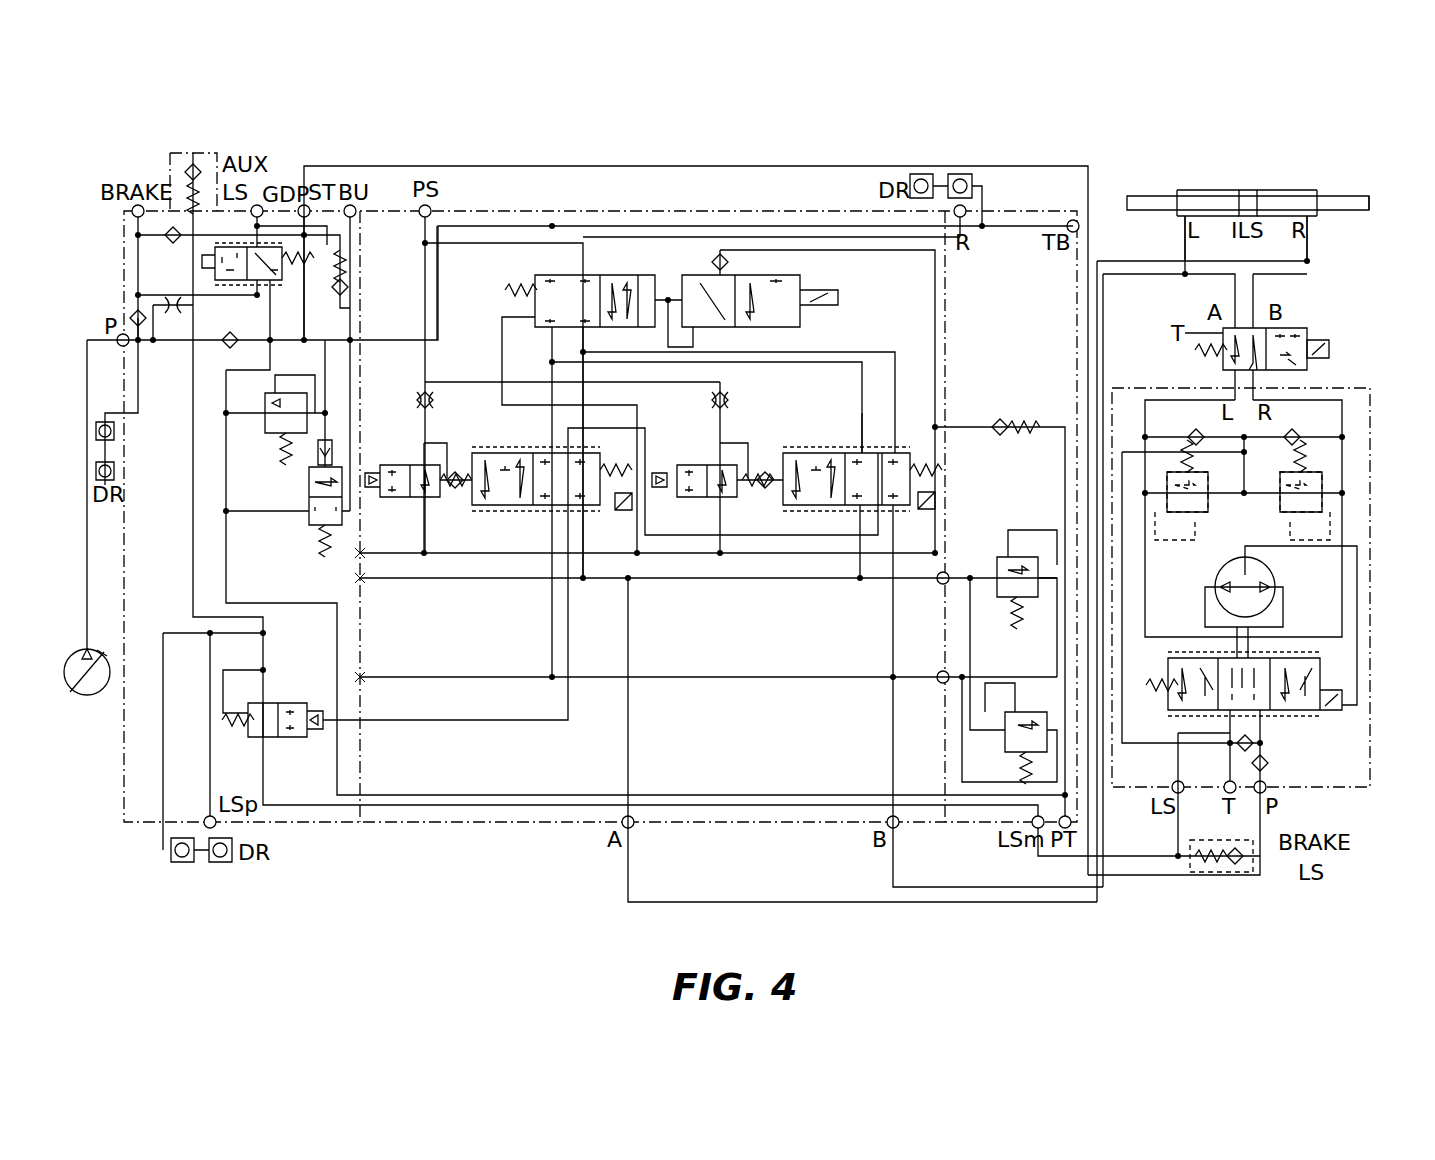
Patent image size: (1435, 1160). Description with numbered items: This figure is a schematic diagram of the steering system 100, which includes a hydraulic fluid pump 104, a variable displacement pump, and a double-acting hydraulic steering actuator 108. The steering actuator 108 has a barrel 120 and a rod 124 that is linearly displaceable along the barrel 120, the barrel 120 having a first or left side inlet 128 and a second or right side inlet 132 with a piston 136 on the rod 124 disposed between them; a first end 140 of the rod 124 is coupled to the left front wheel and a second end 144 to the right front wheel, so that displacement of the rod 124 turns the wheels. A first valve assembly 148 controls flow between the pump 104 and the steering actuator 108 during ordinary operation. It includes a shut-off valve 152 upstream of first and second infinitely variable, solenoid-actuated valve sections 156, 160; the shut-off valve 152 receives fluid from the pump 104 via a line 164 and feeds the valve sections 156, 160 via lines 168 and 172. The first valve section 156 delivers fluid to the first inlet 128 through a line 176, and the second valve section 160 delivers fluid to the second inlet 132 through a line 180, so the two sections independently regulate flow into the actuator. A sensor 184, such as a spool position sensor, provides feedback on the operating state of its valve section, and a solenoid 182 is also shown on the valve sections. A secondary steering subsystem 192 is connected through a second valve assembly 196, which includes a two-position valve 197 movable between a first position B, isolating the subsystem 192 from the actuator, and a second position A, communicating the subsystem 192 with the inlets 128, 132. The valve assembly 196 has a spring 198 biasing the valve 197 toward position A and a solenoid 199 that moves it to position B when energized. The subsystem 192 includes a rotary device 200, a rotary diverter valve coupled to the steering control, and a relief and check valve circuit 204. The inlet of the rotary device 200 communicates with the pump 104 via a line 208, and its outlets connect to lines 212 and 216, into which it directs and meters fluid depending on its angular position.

The steering system 100 is at (786, 150).
The hydraulic fluid pump 104 is at (102, 698).
The double-acting hydraulic steering actuator 108 is at (1287, 186).
The barrel 120 is at (1210, 190).
The rod 124 is at (1337, 195).
The first or left side inlet 128 is at (1182, 220).
The second or right side inlet 132 is at (1312, 220).
The piston 136 is at (1248, 192).
The first end of the rod 140 is at (1127, 200).
The second end of the rod 144 is at (1372, 202).
The first valve assembly 148 is at (438, 832).
The shut-off valve 152 is at (530, 258).
The first valve section 156 is at (512, 525).
The second valve section 160 is at (832, 525).
The line 164 is at (508, 226).
The line 168 is at (555, 433).
The line 172 is at (860, 418).
The line 176 is at (893, 750).
The line 180 is at (630, 740).
The solenoid 182 is at (945, 488).
The sensor 184 is at (622, 512).
The secondary steering subsystem 192 is at (1378, 442).
The second valve assembly 196 is at (1326, 316).
The two-position valve 197 is at (1244, 349).
The spring 198 is at (1200, 354).
The solenoid 199 is at (1330, 350).
The rotary device 200 is at (1216, 570).
The relief and check valve circuit 204 is at (1352, 458).
The line 208 is at (1268, 722).
The line 212 is at (1188, 398).
The line 216 is at (1318, 398).